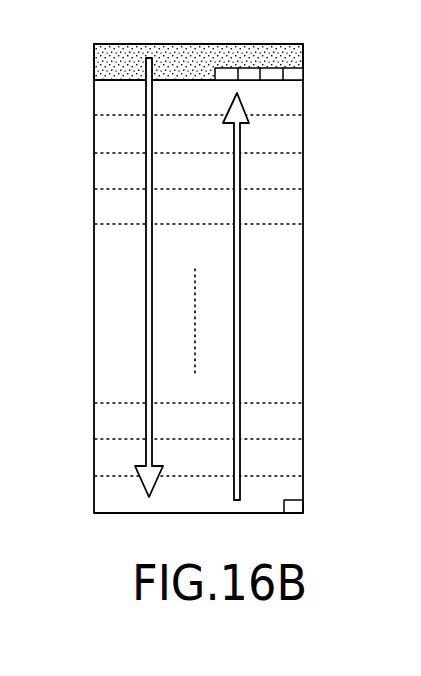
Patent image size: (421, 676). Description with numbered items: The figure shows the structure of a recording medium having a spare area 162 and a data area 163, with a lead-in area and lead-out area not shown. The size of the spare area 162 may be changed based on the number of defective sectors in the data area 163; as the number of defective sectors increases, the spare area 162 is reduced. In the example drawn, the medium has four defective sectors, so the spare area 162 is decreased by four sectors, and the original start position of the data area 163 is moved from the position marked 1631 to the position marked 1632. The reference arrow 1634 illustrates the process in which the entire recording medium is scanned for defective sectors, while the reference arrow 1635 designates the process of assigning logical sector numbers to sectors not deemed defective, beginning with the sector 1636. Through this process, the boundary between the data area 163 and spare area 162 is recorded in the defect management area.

The spare area 162 is at (304, 56).
The data area 163 is at (304, 170).
The original start position of data area 1631 is at (118, 82).
The moved start position of data area 1632 is at (238, 80).
The reference arrow 1634 is at (146, 445).
The reference arrow 1635 is at (241, 290).
The sector 1636 is at (303, 510).